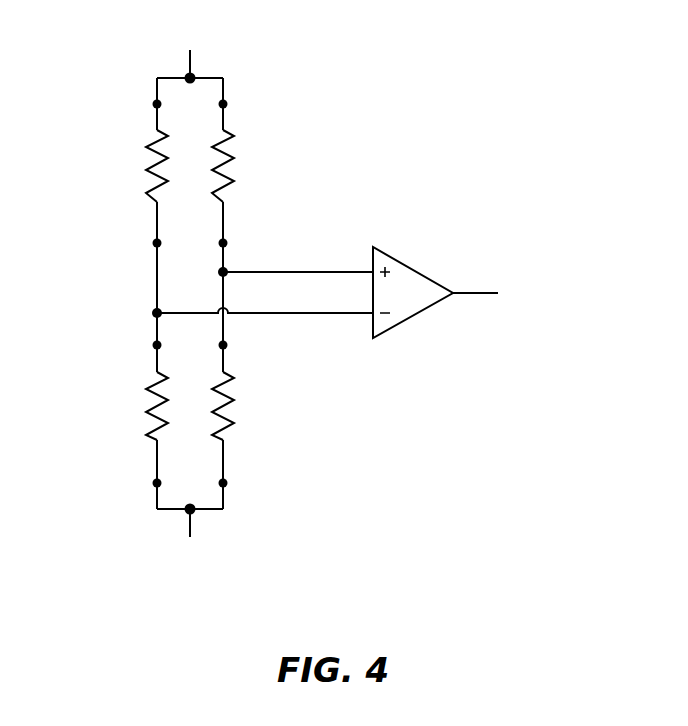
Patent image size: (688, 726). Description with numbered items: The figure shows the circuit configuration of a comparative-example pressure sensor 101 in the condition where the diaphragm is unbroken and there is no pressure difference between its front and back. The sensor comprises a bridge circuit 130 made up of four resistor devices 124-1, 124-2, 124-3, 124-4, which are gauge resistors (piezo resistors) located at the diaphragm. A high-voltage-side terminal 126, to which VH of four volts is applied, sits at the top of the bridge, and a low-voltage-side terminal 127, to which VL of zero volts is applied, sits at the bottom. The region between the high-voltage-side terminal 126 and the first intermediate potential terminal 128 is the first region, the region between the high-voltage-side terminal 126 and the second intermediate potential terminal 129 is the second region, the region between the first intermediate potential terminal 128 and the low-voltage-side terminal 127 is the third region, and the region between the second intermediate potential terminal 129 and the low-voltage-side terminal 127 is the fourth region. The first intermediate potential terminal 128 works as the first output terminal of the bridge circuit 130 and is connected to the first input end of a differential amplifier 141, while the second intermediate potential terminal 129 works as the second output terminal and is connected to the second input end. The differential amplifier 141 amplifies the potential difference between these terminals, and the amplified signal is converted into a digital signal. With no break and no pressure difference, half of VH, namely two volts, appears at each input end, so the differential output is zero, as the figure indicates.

The high-voltage-side terminal 126 is at (187, 77).
The low-voltage-side terminal 127 is at (194, 512).
The first intermediate potential terminal 128 is at (156, 312).
The second intermediate potential terminal 129 is at (225, 270).
The bridge circuit 130 is at (250, 132).
The resistor device 124-1 is at (152, 150).
The resistor device 124-2 is at (234, 160).
The resistor device 124-3 is at (152, 388).
The resistor device 124-4 is at (227, 390).
The differential amplifier 141 is at (393, 259).
The pressure sensor 101 is at (418, 541).